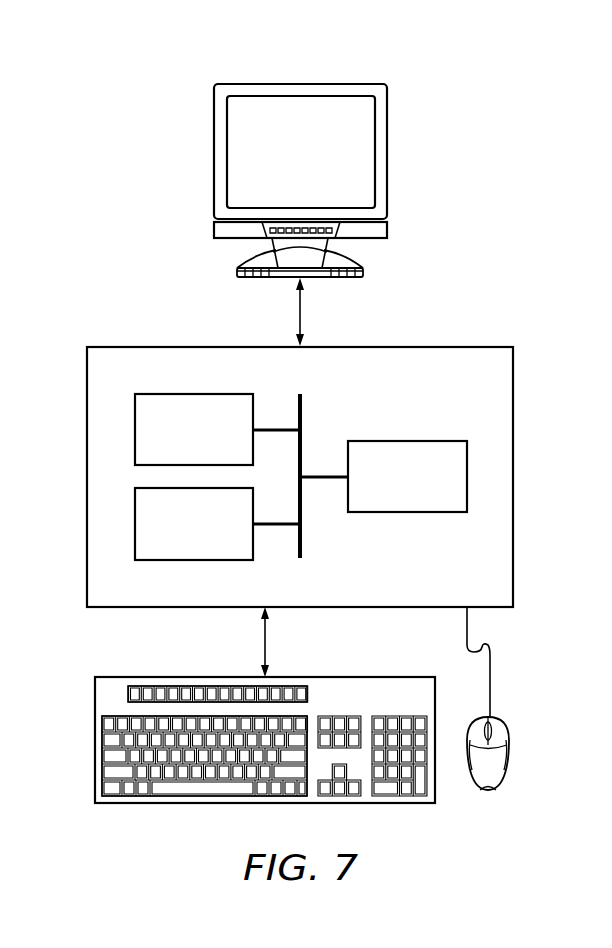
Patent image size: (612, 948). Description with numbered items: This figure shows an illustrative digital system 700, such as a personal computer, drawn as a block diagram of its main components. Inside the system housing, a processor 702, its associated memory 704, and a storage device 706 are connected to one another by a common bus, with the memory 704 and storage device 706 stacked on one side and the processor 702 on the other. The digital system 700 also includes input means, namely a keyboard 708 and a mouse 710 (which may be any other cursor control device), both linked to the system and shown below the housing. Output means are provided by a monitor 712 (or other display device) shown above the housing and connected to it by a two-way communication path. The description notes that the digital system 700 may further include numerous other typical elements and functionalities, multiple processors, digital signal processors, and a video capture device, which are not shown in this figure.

The digital system 700 is at (455, 62).
The processor 702 is at (429, 491).
The memory 704 is at (216, 443).
The storage device 706 is at (216, 538).
The keyboard 708 is at (95, 740).
The mouse 710 is at (509, 755).
The monitor 712 is at (214, 150).